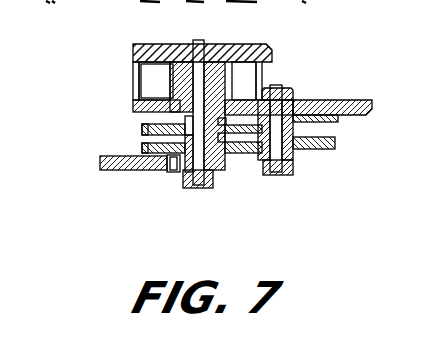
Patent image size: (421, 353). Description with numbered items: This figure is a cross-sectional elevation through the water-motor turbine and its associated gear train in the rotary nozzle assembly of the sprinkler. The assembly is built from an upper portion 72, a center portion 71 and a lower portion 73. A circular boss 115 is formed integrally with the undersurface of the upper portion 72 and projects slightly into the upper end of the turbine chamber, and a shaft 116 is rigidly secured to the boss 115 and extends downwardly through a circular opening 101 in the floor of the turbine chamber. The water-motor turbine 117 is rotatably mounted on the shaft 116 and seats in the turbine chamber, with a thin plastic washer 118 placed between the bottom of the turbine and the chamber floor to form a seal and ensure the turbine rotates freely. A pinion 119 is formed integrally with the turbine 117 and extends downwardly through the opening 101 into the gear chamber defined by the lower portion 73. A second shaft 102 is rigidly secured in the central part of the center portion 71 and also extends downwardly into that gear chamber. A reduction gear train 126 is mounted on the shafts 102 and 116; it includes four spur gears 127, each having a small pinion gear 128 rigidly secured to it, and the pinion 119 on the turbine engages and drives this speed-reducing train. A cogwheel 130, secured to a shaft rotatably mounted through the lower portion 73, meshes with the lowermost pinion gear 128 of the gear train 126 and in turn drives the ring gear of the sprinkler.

The center portion 71 is at (363, 100).
The upper portion 72 is at (271, 43).
The lower portion 73 is at (187, 188).
The circular opening 101 is at (176, 68).
The shaft 102 is at (276, 87).
The circular boss 115 is at (133, 45).
The shaft 116 is at (201, 44).
The water-motor turbine 117 is at (141, 73).
The thin plastic washer 118 is at (160, 88).
The pinion 119 is at (186, 117).
The reduction gear train 126 is at (237, 170).
The spur gears 127 is at (142, 148).
The pinion gear 128 is at (181, 167).
The cogwheel 130 is at (105, 161).